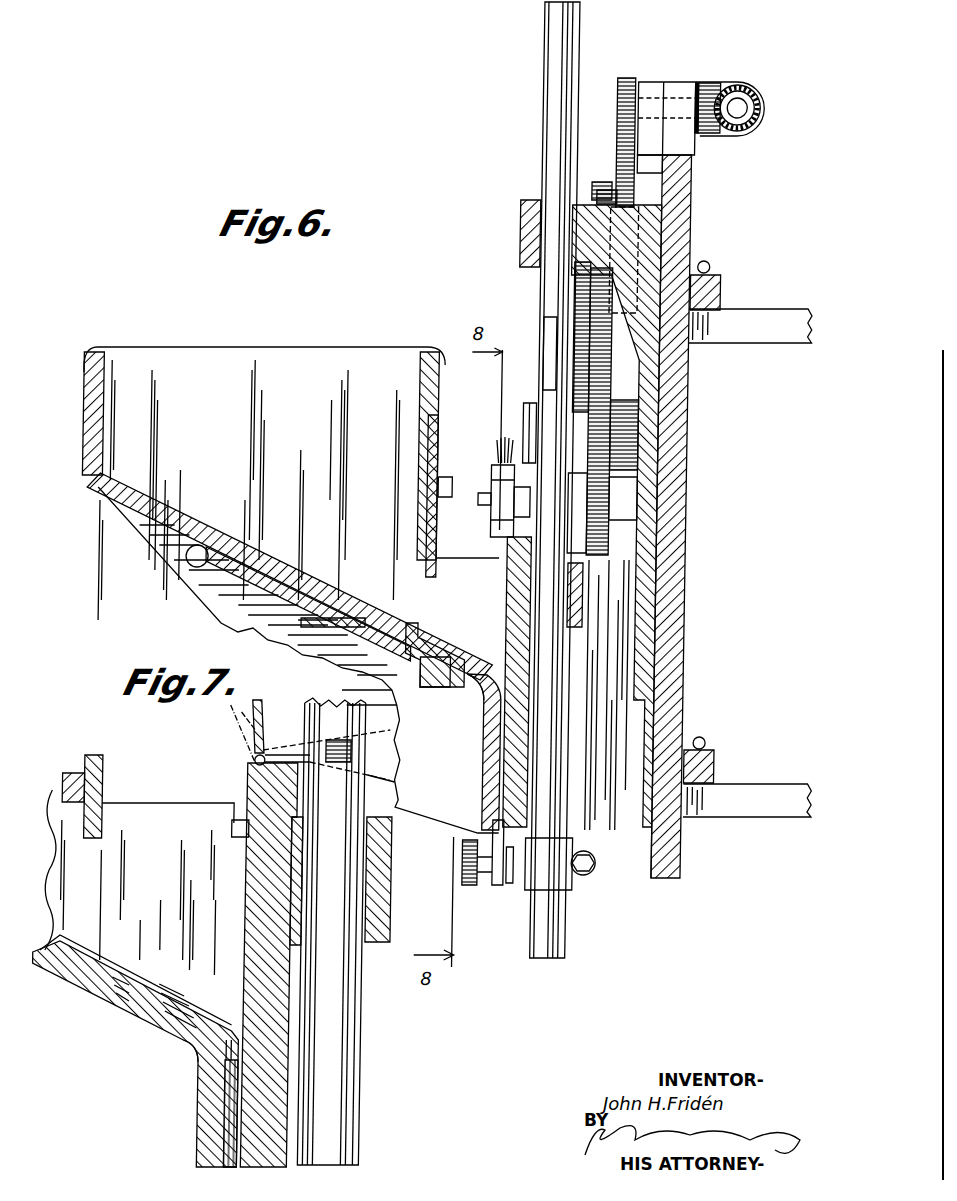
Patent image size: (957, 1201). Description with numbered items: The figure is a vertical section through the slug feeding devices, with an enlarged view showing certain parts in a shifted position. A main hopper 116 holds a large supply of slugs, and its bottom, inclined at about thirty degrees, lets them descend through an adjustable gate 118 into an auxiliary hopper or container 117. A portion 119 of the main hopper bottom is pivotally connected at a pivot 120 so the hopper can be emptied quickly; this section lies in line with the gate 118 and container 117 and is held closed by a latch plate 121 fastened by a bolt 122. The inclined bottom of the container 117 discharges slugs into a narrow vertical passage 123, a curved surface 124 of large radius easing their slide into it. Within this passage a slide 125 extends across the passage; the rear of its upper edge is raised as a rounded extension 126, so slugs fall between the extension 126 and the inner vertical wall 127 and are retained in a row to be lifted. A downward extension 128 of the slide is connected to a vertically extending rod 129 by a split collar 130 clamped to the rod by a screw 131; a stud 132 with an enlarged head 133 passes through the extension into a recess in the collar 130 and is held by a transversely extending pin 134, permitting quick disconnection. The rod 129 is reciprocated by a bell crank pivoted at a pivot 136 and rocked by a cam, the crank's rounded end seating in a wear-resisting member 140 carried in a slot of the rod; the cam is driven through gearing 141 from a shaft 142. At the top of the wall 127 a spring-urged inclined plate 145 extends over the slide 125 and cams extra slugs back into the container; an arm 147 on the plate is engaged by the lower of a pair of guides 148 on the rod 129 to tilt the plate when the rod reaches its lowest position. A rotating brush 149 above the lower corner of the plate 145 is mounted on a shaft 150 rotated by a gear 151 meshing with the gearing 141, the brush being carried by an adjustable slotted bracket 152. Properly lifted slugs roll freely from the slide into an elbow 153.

In FIG. 6, the hopper 116 is at (275, 352).
In FIG. 7, the hopper 116 is at (50, 775).
In FIG. 6, the auxiliary hopper or container 117 is at (455, 575).
In FIG. 7, the auxiliary hopper or container 117 is at (146, 889).
In FIG. 6, the gate 118 is at (427, 540).
In FIG. 7, the gate 118 is at (100, 778).
In FIG. 6, the pivoted portion of hopper bottom 119 is at (310, 570).
In FIG. 6, the pivot 120 is at (190, 565).
In FIG. 6, the latch plate 121 is at (370, 645).
In FIG. 6, the bolt 122 is at (440, 687).
In FIG. 7, the vertically extending passage 123 is at (230, 1058).
In FIG. 6, the curved surface 124 is at (483, 690).
In FIG. 7, the curved surface 124 is at (195, 1032).
In FIG. 6, the slide 125 is at (505, 595).
In FIG. 7, the slide 125 is at (215, 1140).
In FIG. 6, the extension 126 is at (505, 565).
In FIG. 7, the extension 126 is at (225, 1105).
In FIG. 6, the inner vertical wall 127 is at (520, 785).
In FIG. 7, the inner vertical wall 127 is at (265, 1075).
In FIG. 6, the downward extension 128 is at (495, 768).
In FIG. 6, the rod 129 is at (552, 690).
In FIG. 7, the rod 129 is at (350, 1005).
In FIG. 6, the split collar 130 is at (560, 885).
In FIG. 6, the screw 131 is at (595, 870).
In FIG. 6, the stud 132 is at (486, 885).
In FIG. 6, the enlarged head 133 is at (468, 858).
In FIG. 6, the transversely extending pin 134 is at (512, 880).
In FIG. 6, the pivot 136 is at (545, 330).
In FIG. 6, the member 140 is at (600, 372).
In FIG. 7, the member 140 is at (337, 728).
In FIG. 6, the gearing 141 is at (615, 107).
In FIG. 6, the shaft 142 is at (735, 110).
In FIG. 6, the inclined plate 145 is at (491, 530).
In FIG. 7, the inclined plate 145 is at (245, 740).
In FIG. 6, the arm 147 is at (525, 400).
In FIG. 7, the arm 147 is at (290, 753).
In FIG. 6, the guides 148 is at (560, 400).
In FIG. 7, the guides 148 is at (330, 750).
In FIG. 6, the rotating brush 149 is at (500, 448).
In FIG. 6, the shaft 150 is at (480, 495).
In FIG. 6, the gear 151 is at (588, 540).
In FIG. 6, the bracket 152 is at (585, 560).
In FIG. 7, the elbow 153 is at (232, 818).